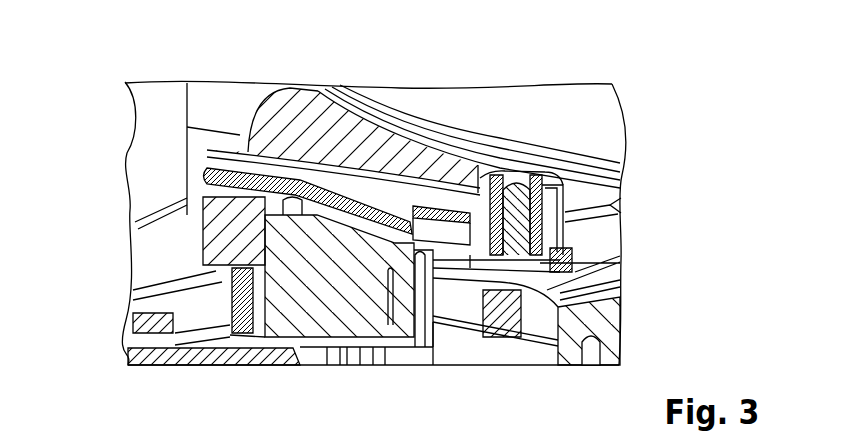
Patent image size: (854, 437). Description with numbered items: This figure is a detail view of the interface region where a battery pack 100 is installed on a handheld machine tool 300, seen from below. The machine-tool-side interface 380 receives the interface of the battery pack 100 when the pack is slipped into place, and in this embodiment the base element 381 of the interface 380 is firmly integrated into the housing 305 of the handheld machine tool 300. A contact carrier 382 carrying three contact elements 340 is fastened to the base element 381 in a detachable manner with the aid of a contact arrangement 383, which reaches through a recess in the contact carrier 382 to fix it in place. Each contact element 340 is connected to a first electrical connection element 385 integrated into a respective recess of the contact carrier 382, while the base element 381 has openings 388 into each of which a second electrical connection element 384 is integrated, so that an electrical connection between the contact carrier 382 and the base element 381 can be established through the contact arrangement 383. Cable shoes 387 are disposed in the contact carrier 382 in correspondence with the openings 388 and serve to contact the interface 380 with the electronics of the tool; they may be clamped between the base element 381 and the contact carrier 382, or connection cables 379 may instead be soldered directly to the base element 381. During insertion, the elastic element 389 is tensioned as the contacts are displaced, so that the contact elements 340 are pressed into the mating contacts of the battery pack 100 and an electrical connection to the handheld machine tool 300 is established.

The battery pack 100 is at (607, 333).
The handheld machine tool 300 is at (447, 88).
The housing 305 is at (173, 80).
The contact elements 340 is at (342, 323).
The connection cables 379 is at (217, 178).
The interface 380 is at (438, 292).
The base element 381 is at (320, 82).
The contact carrier 382 is at (433, 347).
The contact arrangement 383 is at (613, 213).
The second electrical connection element 384 is at (543, 183).
The first electrical connection element 385 is at (573, 258).
The cable shoe 387 is at (420, 207).
The opening 388 is at (512, 172).
The elastic element 389 is at (243, 365).